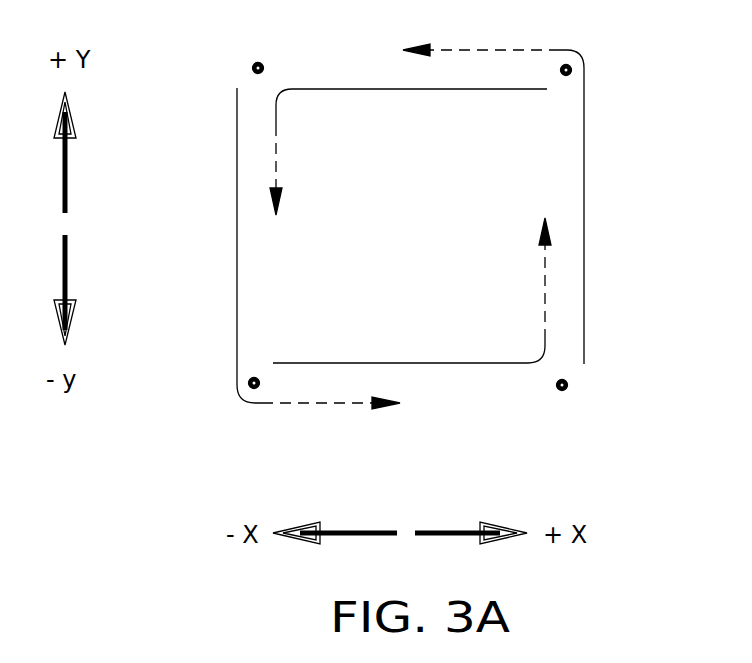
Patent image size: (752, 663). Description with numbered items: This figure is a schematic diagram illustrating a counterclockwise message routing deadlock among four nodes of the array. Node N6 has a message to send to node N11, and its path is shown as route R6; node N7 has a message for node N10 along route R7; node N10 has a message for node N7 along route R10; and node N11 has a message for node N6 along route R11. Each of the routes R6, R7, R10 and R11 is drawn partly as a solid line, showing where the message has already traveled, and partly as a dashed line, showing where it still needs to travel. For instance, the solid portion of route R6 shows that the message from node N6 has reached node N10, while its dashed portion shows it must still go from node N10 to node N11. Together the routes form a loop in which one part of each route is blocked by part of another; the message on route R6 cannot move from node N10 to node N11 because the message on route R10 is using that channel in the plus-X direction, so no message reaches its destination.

The node N6 is at (255, 64).
The node N7 is at (568, 66).
The node N10 is at (251, 387).
The node N11 is at (565, 391).
The route R6 is at (237, 203).
The route R7 is at (424, 89).
The route R10 is at (398, 363).
The route R11 is at (584, 178).